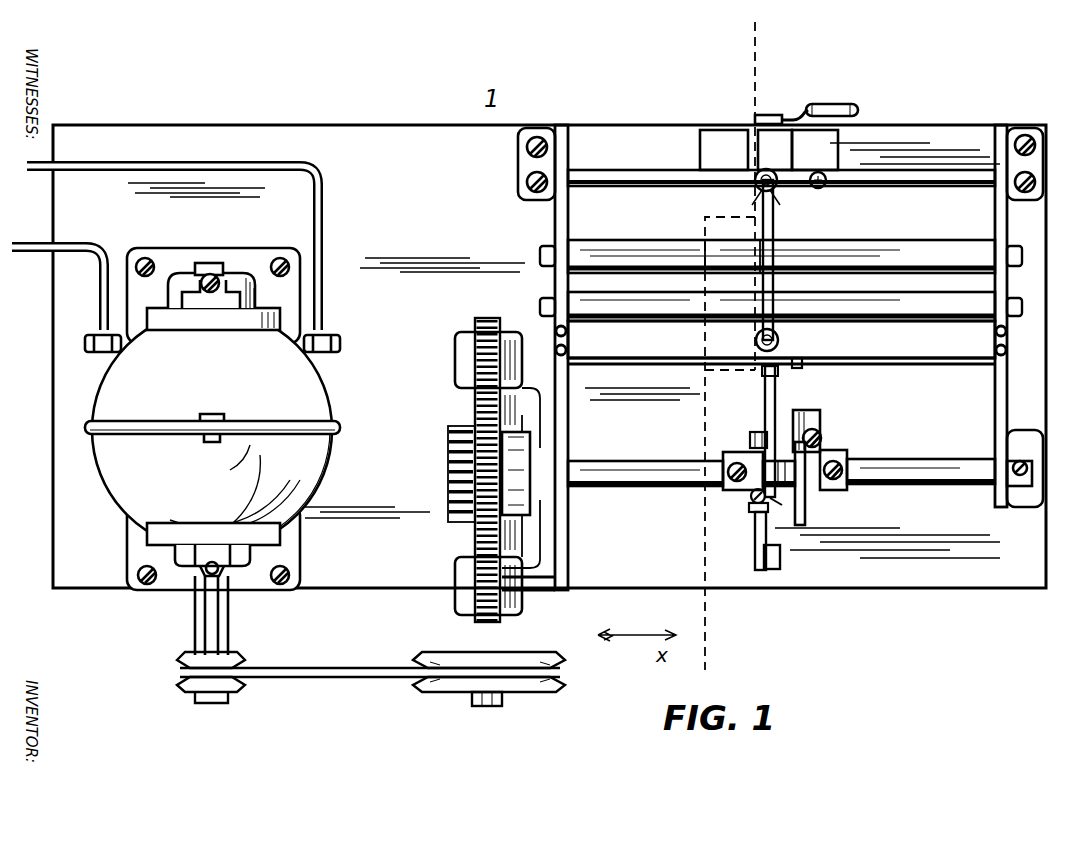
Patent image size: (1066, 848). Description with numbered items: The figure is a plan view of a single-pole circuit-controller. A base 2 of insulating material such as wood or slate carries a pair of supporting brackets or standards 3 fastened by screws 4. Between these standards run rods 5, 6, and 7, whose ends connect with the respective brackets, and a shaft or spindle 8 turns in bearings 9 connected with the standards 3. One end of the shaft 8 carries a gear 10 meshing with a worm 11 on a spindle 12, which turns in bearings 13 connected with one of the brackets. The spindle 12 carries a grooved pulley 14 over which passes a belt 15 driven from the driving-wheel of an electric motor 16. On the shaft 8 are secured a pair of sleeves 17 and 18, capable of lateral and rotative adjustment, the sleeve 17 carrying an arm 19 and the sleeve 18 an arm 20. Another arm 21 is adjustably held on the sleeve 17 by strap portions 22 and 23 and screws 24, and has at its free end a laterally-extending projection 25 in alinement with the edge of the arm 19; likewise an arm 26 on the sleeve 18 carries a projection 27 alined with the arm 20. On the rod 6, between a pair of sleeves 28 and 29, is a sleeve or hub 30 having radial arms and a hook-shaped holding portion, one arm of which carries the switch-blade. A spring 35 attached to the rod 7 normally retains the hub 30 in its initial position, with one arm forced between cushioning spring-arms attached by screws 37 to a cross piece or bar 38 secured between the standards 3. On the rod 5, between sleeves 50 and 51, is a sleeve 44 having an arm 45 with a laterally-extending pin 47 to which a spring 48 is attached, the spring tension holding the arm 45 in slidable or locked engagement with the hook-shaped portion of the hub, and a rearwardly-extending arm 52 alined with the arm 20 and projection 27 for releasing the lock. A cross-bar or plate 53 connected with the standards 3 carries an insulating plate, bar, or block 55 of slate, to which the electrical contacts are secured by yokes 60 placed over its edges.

The base 2 is at (549, 356).
The supporting brackets or standards 3 is at (555, 222).
The screws 4 is at (518, 182).
The rod 5 is at (740, 343).
The rod 6 is at (540, 256).
The rod 7 is at (917, 186).
The shaft or spindle 8 is at (946, 460).
The bearings 9 is at (575, 472).
The gear 10 is at (487, 320).
The worm 11 is at (455, 468).
The spindle 12 is at (490, 706).
The bearings 13 is at (455, 363).
The pulley 14 is at (548, 690).
The belt 15 is at (345, 668).
The electric motor 16 is at (212, 451).
The sleeve 17 is at (749, 492).
The sleeve 18 is at (847, 456).
The arm 19 is at (765, 385).
The arm 20 is at (803, 525).
The arm 21 is at (755, 545).
The strap portion 22 is at (785, 515).
The strap portion 23 is at (750, 452).
The screws 24 is at (755, 432).
The laterally-extending projection 25 is at (780, 558).
The arm 26 is at (822, 424).
The laterally-extending projection 27 is at (804, 412).
The sleeve 28 is at (650, 232).
The sleeve 29 is at (934, 243).
The sleeve or hub 30 is at (732, 256).
The spring 35 is at (755, 195).
The screws 37 is at (779, 340).
The cross piece or bar 38 is at (880, 339).
The sleeve 44 is at (750, 320).
The arm 45 is at (773, 228).
The laterally-extending pin 47 is at (802, 188).
The spring 48 is at (828, 186).
The sleeve 50 is at (660, 310).
The sleeve 51 is at (931, 305).
The rearwardly-extending arm 52 is at (802, 366).
The cross-bar or plate 53 is at (660, 170).
The insulating plate, bar, or block 55 is at (725, 138).
The yoke 60 is at (806, 137).